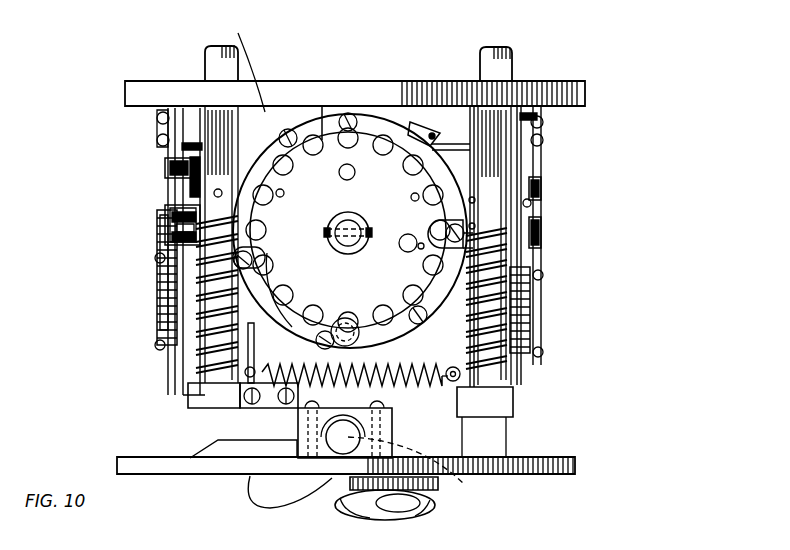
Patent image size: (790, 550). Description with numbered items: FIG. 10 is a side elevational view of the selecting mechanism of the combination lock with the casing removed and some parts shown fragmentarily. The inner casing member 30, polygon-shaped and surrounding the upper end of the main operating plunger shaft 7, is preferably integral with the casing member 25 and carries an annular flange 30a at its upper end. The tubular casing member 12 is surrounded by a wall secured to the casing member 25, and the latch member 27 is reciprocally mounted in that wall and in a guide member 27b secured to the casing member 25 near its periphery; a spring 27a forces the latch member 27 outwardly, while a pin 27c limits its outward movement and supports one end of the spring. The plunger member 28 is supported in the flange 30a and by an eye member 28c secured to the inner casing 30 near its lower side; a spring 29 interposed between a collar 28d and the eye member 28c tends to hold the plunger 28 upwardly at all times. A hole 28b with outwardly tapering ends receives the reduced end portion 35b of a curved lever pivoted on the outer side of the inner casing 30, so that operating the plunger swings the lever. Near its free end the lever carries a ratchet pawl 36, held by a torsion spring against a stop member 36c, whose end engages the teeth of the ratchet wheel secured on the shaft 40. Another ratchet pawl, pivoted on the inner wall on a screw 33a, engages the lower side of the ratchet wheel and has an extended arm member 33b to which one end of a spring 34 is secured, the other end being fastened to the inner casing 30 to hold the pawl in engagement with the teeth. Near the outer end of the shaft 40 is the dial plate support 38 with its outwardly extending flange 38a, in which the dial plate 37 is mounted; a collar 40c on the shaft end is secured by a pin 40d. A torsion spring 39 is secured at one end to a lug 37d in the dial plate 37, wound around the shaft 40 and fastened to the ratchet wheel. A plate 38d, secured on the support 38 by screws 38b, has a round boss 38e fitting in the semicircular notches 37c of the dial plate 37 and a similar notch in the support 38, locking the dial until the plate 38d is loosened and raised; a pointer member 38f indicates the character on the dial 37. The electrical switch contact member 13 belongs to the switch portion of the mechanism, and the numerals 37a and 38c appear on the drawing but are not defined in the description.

The main operating plunger shaft 7 is at (372, 519).
The tubular casing member 12 is at (135, 61).
The electrical switch contact member 13 is at (58, 66).
The casing member 25 is at (528, 476).
The latch member 27 is at (343, 437).
The spring 27a is at (300, 452).
The guide member 27b is at (358, 470).
The pin 27c is at (466, 488).
The plunger member 28 is at (213, 75).
The hole 28b is at (214, 194).
The eye member 28c is at (195, 401).
The collar 28d is at (195, 222).
The spring 29 is at (200, 372).
The inner casing member 30 is at (445, 428).
The annular flange 30a is at (582, 87).
The screw 33a is at (240, 402).
The extended arm member 33b is at (250, 402).
The spring 34 is at (425, 388).
The reduced end portion 35b is at (175, 226).
The ratchet pawl 36 is at (430, 135).
The stop member 36c is at (445, 130).
The dial plate 37 is at (239, 63).
The left side plate 37a is at (168, 166).
The semicircular notches 37c is at (322, 140).
The lug 37d is at (541, 177).
The dial plate support 38 is at (287, 112).
The outwardly extending flange 38a is at (288, 129).
The screws 38b is at (156, 258).
The dial shaft 38c is at (330, 236).
The plate 38d is at (157, 283).
The round boss 38e is at (411, 243).
The pointer member 38f is at (158, 131).
The torsion spring 39 is at (175, 180).
The shaft 40 is at (375, 200).
The collar 40c is at (170, 242).
The pin 40d is at (172, 230).